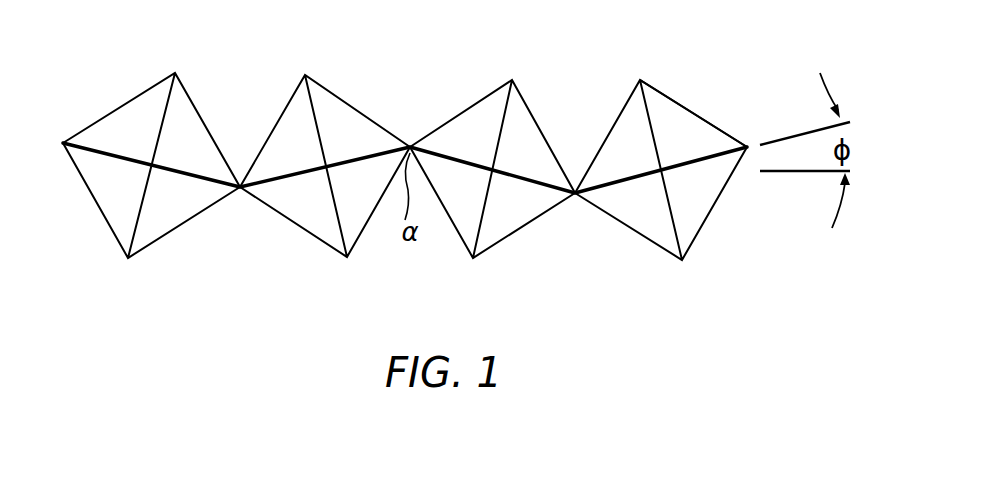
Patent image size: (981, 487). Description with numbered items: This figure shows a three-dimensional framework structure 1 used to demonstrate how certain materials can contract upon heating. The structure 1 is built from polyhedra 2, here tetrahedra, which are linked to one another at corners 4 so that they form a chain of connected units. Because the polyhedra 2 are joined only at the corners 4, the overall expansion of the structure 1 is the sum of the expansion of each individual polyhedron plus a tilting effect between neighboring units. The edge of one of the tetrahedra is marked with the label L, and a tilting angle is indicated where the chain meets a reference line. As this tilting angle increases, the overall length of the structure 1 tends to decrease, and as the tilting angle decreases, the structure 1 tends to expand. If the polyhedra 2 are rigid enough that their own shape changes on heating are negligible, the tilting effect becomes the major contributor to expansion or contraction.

The three-dimensional framework structure 1 is at (384, 191).
The polyhedra 2 is at (497, 67).
The corners 4 is at (240, 182).
The strut length L is at (693, 113).